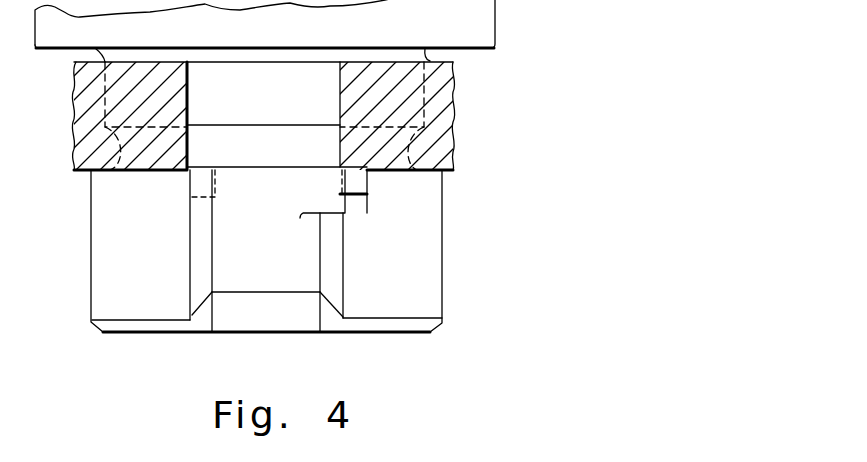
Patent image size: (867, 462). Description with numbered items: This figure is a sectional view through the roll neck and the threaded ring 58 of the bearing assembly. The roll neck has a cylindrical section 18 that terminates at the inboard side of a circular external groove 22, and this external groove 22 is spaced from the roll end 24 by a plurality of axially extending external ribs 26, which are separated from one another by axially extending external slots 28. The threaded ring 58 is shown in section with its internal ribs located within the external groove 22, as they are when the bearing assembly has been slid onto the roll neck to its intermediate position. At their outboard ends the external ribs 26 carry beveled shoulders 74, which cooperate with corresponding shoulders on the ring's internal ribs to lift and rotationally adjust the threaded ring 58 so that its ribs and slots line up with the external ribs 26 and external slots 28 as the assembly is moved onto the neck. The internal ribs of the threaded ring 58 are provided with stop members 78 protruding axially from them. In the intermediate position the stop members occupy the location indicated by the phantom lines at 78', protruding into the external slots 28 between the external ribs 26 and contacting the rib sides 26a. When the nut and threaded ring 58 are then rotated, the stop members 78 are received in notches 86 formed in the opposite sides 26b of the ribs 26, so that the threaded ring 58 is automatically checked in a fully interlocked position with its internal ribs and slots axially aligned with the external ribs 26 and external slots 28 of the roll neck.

The cylindrical section 18 is at (480, 32).
The external groove 22 is at (448, 53).
The threaded ring 58 is at (442, 117).
The stop member 78 is at (420, 134).
The stop member (intermediate position) 78' is at (129, 131).
The notch 86 is at (355, 203).
The external rib 26 is at (110, 278).
The rib side 26a is at (203, 257).
The rib side 26b is at (337, 260).
The beveled shoulder 74 is at (198, 322).
The external slot 28 is at (245, 280).
The roll end 24 is at (312, 335).